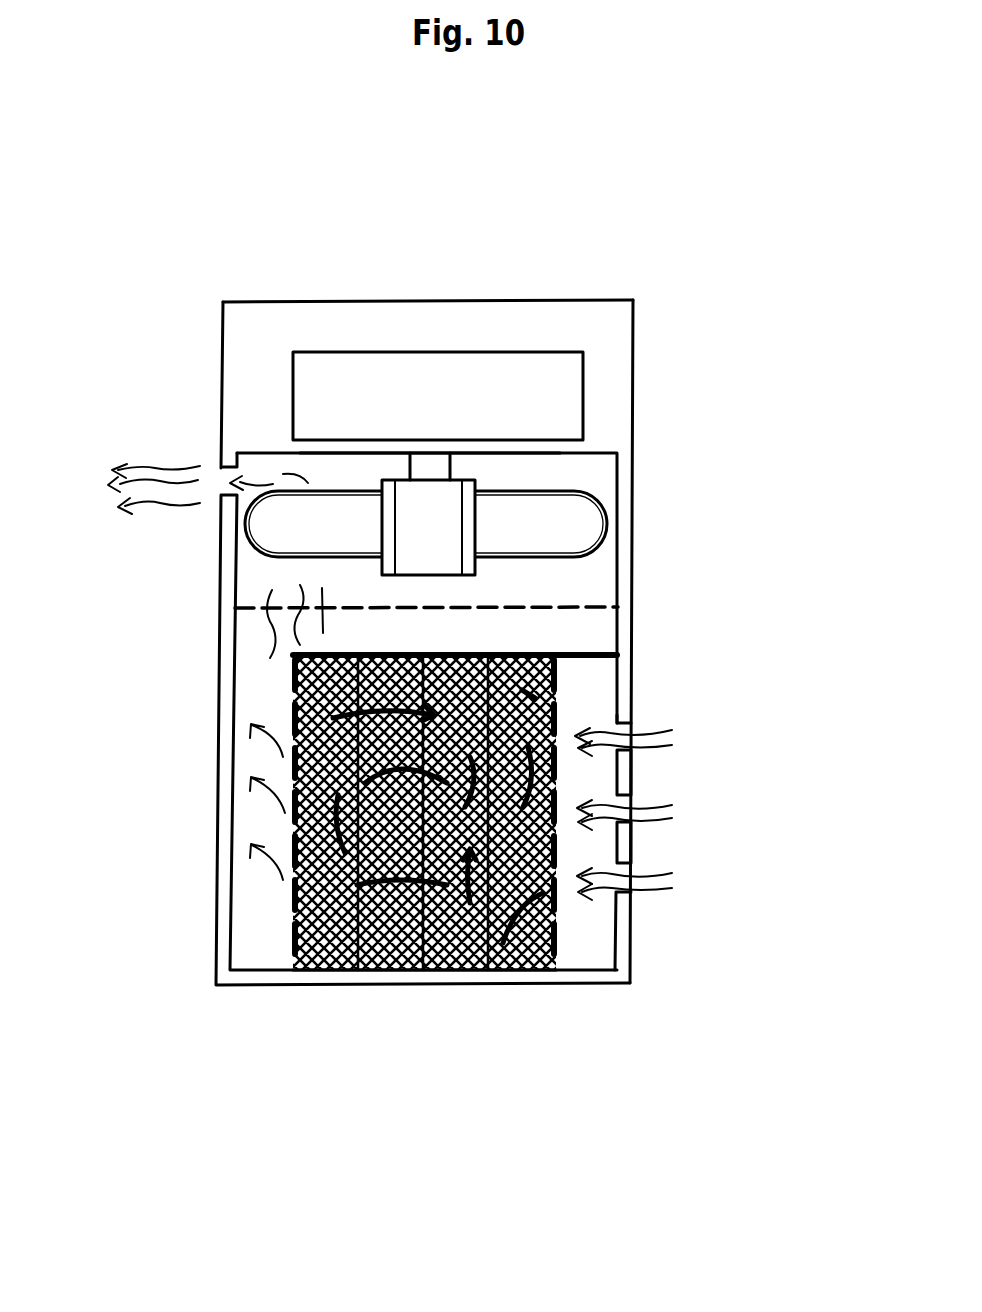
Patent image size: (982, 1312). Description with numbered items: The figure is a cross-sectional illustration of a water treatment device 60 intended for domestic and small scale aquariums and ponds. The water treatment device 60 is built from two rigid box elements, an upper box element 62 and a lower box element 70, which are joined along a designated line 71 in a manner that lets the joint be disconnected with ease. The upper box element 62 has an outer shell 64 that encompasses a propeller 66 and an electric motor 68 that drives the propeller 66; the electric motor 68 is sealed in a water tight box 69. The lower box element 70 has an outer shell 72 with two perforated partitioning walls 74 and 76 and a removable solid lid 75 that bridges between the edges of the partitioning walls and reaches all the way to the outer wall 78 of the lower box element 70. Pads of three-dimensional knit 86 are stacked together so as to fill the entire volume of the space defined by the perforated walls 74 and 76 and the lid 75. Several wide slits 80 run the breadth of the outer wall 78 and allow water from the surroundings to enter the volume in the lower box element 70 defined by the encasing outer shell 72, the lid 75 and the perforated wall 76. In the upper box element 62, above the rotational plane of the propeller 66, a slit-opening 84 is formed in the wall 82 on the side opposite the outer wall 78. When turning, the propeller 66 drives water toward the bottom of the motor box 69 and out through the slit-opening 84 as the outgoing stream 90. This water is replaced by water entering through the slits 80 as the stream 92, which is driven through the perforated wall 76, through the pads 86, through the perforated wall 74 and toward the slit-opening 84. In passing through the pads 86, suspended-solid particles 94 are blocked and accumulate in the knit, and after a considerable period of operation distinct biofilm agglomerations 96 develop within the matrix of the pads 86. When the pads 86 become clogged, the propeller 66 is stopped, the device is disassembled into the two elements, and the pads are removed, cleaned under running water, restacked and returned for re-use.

The water treatment device 60 is at (465, 568).
The upper box element 62 is at (652, 390).
The outer shell 64 is at (615, 258).
The propeller 66 is at (580, 530).
The electric motor 68 is at (562, 397).
The water tight box 69 is at (450, 330).
The lower box element 70 is at (170, 917).
The designated line 71 is at (245, 608).
The outer shell 72 is at (452, 977).
The perforated partitioning wall 74 is at (292, 977).
The removable solid lid 75 is at (595, 652).
The perforated partitioning wall 76 is at (548, 973).
The outer wall 78 is at (627, 953).
The slits 80 is at (637, 737).
The wall 82 is at (222, 343).
The slit-opening 84 is at (220, 470).
The pads of 3D knit 86 is at (343, 970).
The stream 90 is at (177, 465).
The stream 92 is at (243, 857).
The SS-particles 94 is at (483, 970).
The biofilm agglomerations 96 is at (405, 970).